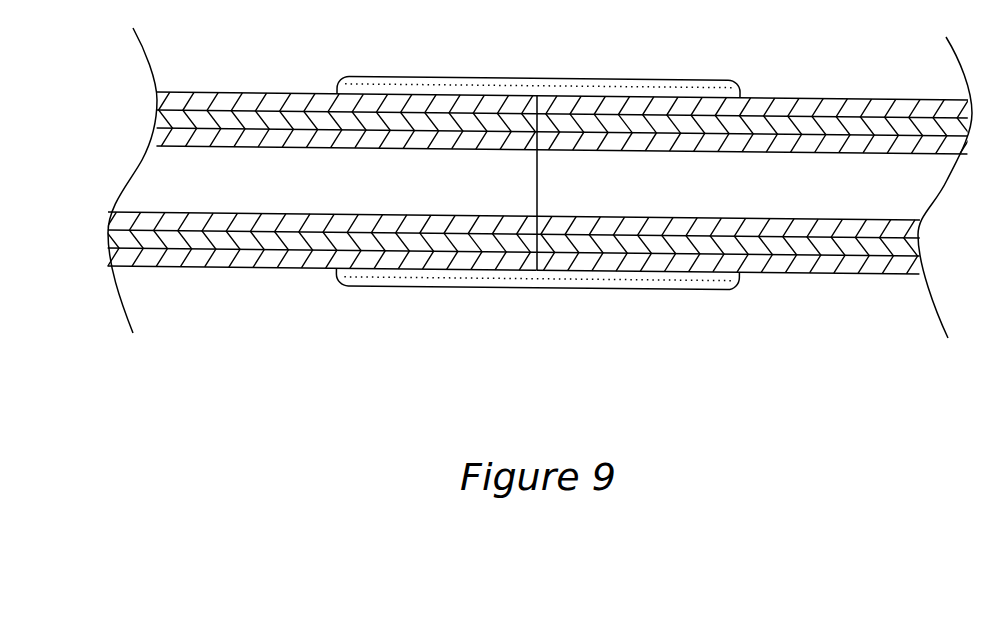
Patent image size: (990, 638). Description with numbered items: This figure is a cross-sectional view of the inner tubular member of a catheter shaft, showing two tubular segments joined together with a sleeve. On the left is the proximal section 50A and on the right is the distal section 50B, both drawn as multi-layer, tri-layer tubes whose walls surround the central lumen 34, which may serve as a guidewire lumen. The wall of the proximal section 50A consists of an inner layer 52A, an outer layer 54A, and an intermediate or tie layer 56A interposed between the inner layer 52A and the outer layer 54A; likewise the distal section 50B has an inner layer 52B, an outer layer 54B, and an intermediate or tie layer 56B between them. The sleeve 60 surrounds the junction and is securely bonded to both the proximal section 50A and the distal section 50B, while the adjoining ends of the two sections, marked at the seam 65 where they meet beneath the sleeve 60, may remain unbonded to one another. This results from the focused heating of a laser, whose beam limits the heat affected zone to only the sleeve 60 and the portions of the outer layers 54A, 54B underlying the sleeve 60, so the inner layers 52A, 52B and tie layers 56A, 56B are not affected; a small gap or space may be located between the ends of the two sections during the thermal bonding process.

The lumen 34 is at (811, 198).
The proximal section 50A is at (321, 196).
The distal section 50B is at (757, 203).
The inner layer 52A is at (298, 223).
The inner layer 52B is at (877, 230).
The outer layer 54A is at (195, 266).
The outer layer 54B is at (772, 265).
The intermediate or tie layer 56A is at (230, 242).
The intermediate or tie layer 56B is at (807, 248).
The sleeve 60 is at (570, 87).
The joint between tubing segments 65 is at (537, 268).